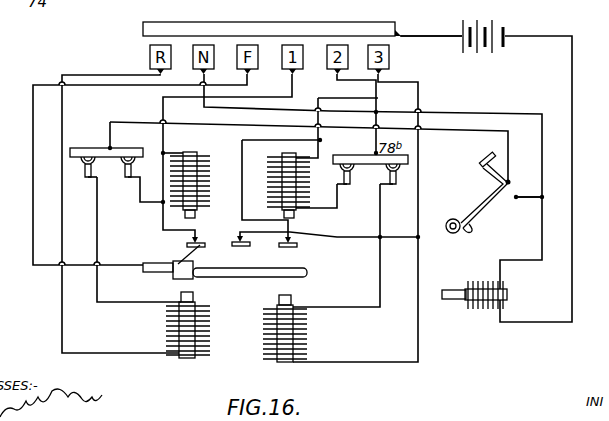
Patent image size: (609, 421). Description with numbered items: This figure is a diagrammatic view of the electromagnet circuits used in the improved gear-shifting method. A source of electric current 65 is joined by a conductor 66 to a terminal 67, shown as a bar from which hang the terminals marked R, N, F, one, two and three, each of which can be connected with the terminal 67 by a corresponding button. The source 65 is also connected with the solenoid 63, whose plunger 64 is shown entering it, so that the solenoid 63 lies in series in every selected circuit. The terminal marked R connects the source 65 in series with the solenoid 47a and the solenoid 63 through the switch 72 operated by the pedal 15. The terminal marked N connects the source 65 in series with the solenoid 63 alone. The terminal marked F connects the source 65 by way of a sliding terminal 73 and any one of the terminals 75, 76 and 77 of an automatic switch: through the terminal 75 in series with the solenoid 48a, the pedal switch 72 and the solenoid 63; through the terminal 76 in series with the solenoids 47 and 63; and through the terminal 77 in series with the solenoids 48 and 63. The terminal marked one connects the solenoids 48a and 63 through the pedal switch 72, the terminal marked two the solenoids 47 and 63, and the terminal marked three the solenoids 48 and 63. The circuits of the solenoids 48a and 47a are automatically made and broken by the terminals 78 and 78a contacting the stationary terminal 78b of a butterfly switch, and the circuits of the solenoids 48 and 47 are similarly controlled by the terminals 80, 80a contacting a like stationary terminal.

The terminal 67 is at (268, 25).
The conductor 66 is at (431, 18).
The source of electric current 65 is at (490, 50).
The stationary terminal 78b is at (106, 145).
The terminal 78 is at (83, 177).
The terminal 78a is at (122, 177).
The solenoid 48a is at (198, 154).
The solenoid 48 is at (272, 163).
The terminal 80 is at (349, 184).
The terminal 80a is at (398, 184).
The pedal 15 is at (482, 207).
The pedal switch 72 is at (525, 189).
The sliding terminal 73 is at (225, 261).
The terminal 75 is at (206, 251).
The terminal 76 is at (244, 245).
The terminal 77 is at (293, 248).
The solenoid 47a is at (167, 327).
The solenoid 47 is at (298, 334).
The solenoid 63 is at (472, 312).
The plunger 64 is at (446, 288).